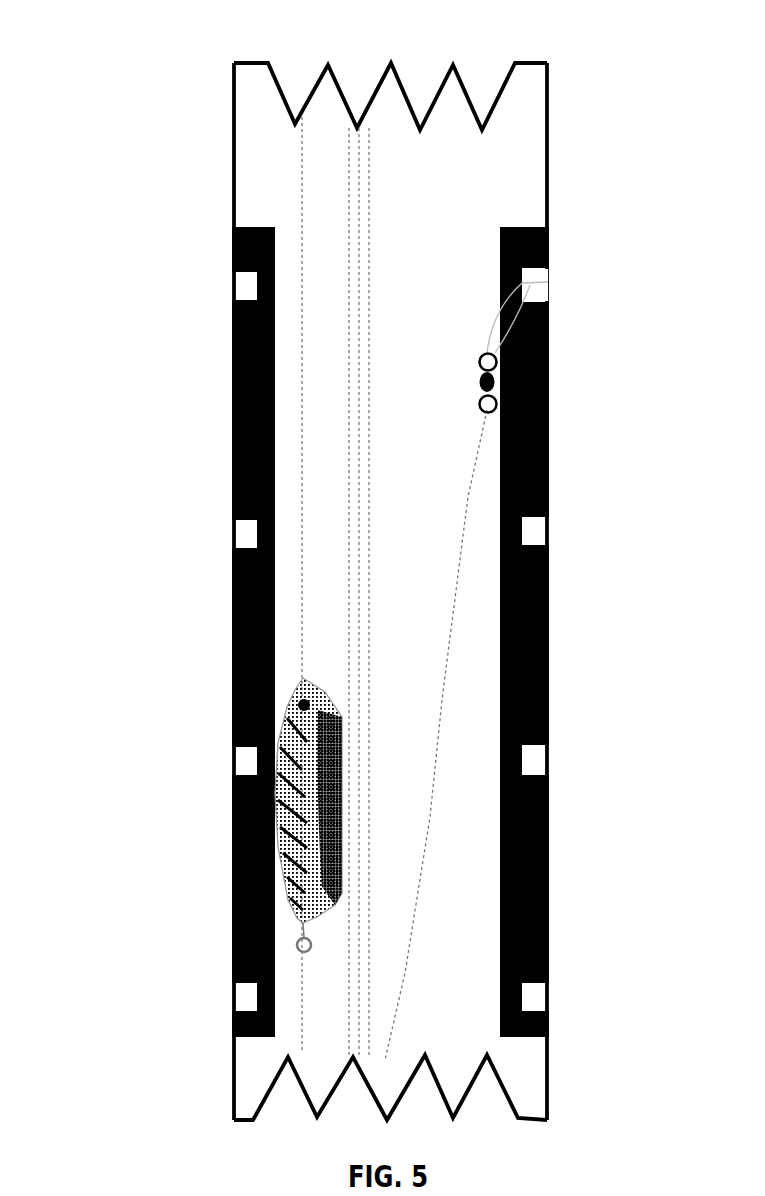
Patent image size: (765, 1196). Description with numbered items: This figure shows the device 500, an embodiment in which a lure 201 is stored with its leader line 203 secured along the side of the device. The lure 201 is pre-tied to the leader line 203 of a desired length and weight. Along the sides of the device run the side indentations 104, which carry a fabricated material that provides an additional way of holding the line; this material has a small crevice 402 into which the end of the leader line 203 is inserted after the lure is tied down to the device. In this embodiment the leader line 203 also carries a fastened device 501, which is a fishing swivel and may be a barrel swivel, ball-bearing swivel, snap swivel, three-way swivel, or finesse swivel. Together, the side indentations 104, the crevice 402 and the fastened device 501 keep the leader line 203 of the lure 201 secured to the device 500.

The device 500 is at (633, 54).
The side indentations 104 is at (530, 250).
The small crevice 402 is at (549, 282).
The leader line 203 is at (489, 288).
The fastened device 501 is at (477, 360).
The lure 201 is at (298, 678).